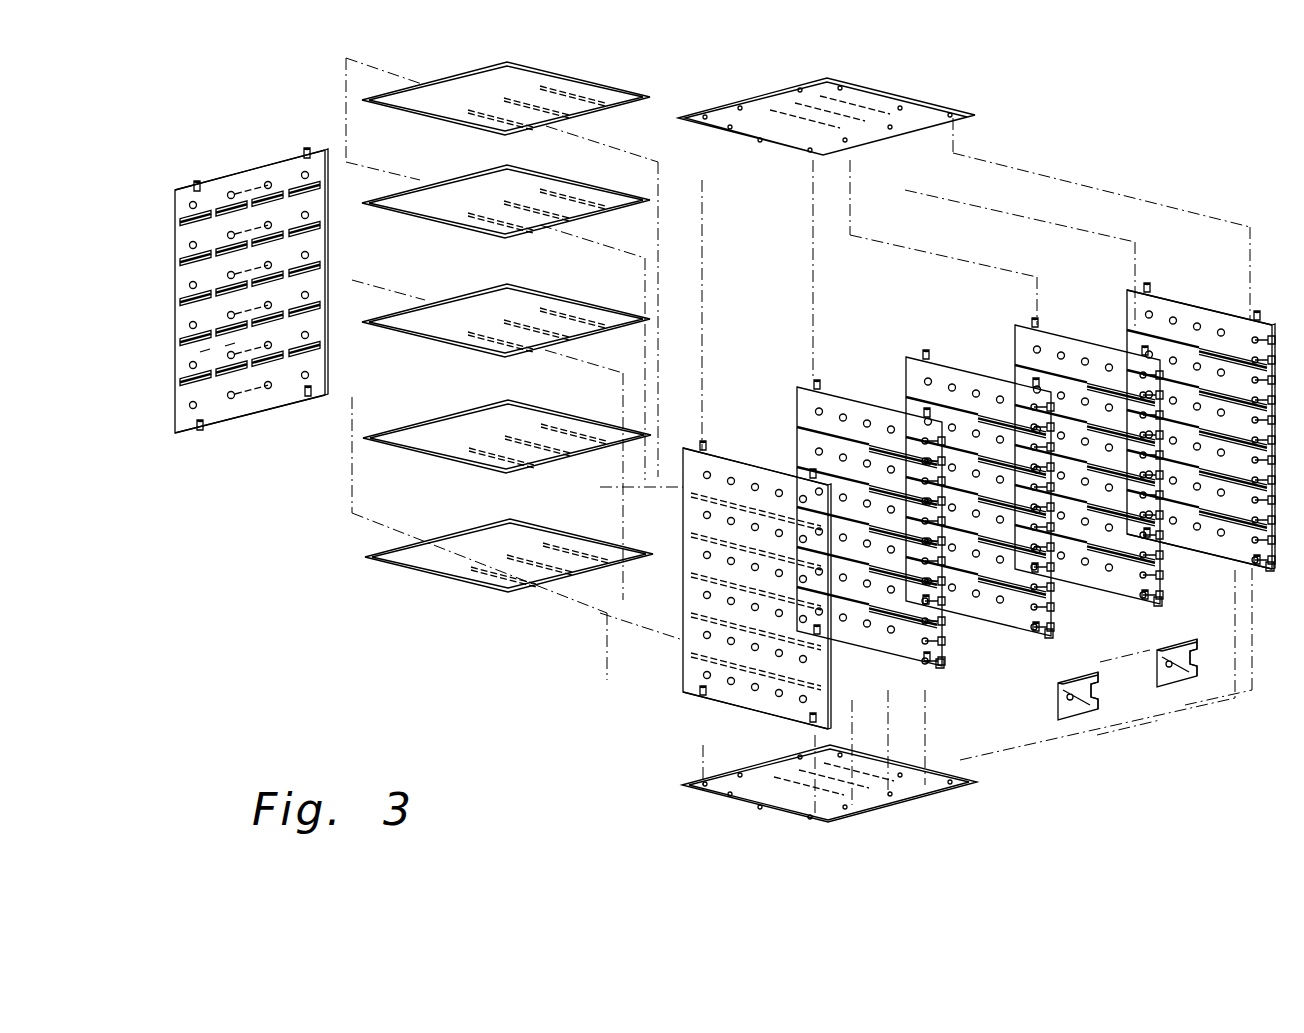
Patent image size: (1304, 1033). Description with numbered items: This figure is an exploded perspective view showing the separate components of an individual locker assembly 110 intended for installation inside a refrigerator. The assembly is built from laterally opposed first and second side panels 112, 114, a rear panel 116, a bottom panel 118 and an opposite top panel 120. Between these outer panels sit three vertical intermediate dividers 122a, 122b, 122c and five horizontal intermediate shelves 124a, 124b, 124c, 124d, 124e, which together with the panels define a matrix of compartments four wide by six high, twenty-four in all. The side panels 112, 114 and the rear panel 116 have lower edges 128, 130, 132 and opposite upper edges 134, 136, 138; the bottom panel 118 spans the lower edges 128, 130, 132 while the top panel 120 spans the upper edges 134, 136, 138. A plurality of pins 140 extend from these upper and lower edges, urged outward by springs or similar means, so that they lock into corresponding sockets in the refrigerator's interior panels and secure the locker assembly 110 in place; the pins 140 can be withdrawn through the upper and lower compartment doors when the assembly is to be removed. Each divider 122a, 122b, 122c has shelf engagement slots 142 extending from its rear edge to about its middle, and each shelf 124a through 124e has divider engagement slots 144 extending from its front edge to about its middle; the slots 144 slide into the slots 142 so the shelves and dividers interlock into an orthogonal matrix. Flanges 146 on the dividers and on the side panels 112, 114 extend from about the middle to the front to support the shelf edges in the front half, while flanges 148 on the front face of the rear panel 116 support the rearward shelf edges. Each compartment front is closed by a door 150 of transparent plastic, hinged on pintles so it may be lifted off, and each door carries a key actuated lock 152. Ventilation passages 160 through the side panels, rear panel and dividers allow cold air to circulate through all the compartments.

The individual locker assembly 110 is at (303, 672).
The first side panel 112 is at (685, 647).
The second side panel 114 is at (1195, 306).
The rear panel 116 is at (290, 405).
The bottom panel 118 is at (730, 795).
The top panel 120 is at (890, 105).
The intermediate divider 122a is at (873, 404).
The intermediate divider 122b is at (985, 376).
The intermediate divider 122c is at (1090, 343).
The intermediate shelf 124a is at (425, 572).
The intermediate shelf 124b is at (398, 448).
The intermediate shelf 124c is at (398, 333).
The intermediate shelf 124d is at (398, 213).
The intermediate shelf 124e is at (402, 108).
The lower edge 128 is at (690, 695).
The lower edge 130 is at (1200, 550).
The lower edge 132 is at (240, 418).
The upper edge 134 is at (742, 460).
The upper edge 136 is at (1235, 316).
The upper edge 138 is at (180, 185).
The pins 140 is at (200, 182).
The shelf engagement slots 142 is at (796, 465).
The divider engagement slots 144 is at (540, 88).
The flanges 146 is at (936, 662).
The flanges 148 is at (228, 353).
The door 150 is at (1167, 695).
The lock 152 is at (1170, 650).
The ventilation passages 160 is at (303, 172).